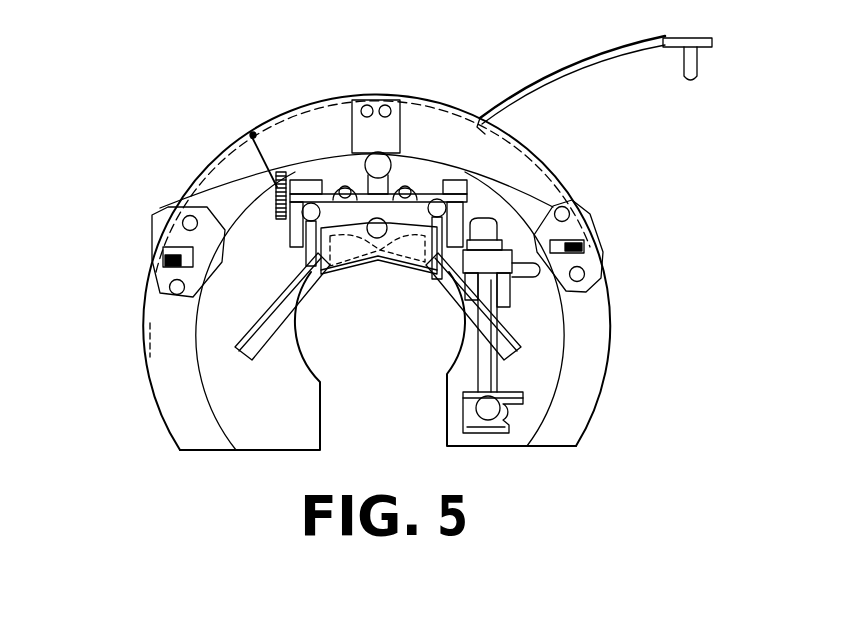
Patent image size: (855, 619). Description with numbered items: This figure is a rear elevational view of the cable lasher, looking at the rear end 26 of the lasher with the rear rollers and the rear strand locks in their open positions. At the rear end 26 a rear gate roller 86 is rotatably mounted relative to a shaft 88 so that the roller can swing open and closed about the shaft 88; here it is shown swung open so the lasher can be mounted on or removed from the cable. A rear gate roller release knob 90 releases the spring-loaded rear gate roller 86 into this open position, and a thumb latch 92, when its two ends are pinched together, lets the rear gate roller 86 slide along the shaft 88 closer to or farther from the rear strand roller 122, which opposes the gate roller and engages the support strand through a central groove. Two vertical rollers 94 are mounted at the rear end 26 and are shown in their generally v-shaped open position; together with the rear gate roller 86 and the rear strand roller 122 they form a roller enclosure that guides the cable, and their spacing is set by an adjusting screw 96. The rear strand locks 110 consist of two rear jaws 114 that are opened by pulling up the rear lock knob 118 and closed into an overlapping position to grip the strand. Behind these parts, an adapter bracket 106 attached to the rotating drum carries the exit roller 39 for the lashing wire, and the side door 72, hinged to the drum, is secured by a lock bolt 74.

The rear end 26 is at (603, 160).
The exit roller 39 is at (160, 270).
The side door 72 is at (613, 50).
The lock bolt 74 is at (683, 64).
The rear gate roller 86 is at (490, 410).
The shaft 88 is at (492, 368).
The rear gate roller release knob 90 is at (548, 232).
The thumb latch 92 is at (527, 405).
The vertical rollers 94 is at (257, 350).
The adjusting screw 96 is at (274, 212).
The adapter bracket 106 is at (296, 142).
The rear strand locks 110 is at (343, 192).
The rear jaws 114 is at (303, 209).
The rear lock knob 118 is at (383, 166).
The rear strand roller 122 is at (343, 257).